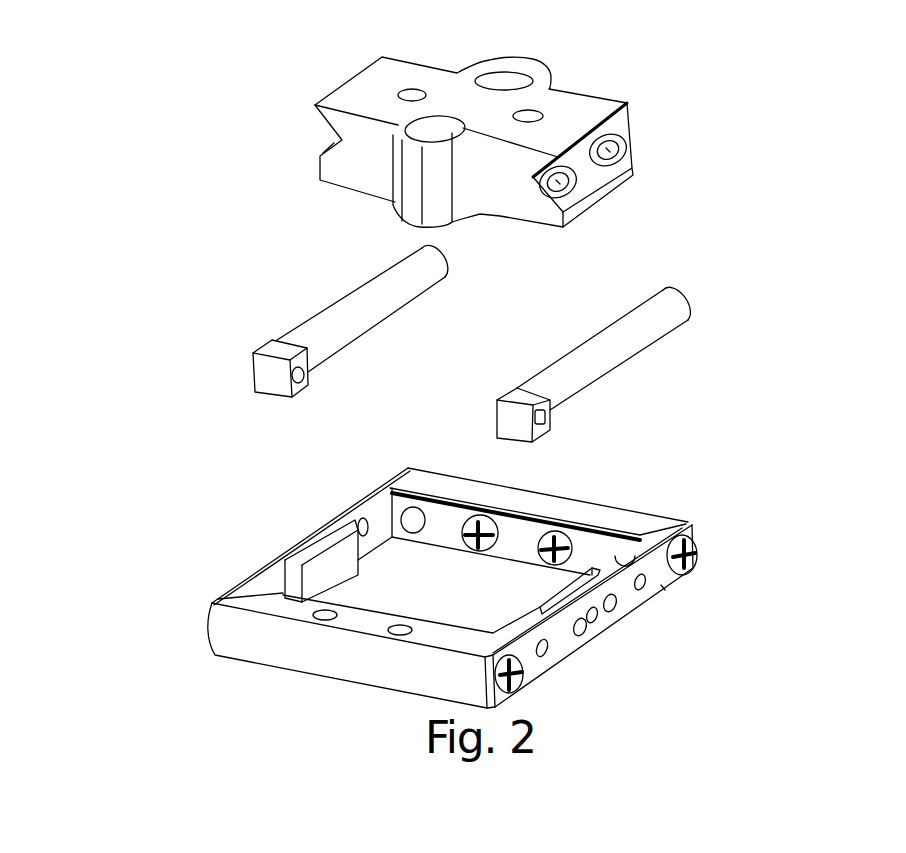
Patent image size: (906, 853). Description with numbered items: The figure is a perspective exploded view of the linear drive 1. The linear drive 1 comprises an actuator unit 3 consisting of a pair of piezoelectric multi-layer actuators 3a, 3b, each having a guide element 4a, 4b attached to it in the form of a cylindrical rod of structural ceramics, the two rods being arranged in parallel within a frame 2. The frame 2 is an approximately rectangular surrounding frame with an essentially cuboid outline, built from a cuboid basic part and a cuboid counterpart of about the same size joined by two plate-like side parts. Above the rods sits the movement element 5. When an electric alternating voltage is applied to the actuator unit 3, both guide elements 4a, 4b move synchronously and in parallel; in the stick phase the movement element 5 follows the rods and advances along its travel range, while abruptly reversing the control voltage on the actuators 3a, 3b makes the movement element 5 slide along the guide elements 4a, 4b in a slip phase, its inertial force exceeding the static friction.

The linear drive 1 is at (137, 333).
The frame 2 is at (159, 653).
The actuator unit 3 is at (357, 385).
The piezoelectric multi-layer actuator 3a is at (262, 377).
The piezoelectric multi-layer actuator 3b is at (508, 422).
The guide element 4a is at (362, 300).
The guide element 4b is at (610, 330).
The movement element 5 is at (204, 133).